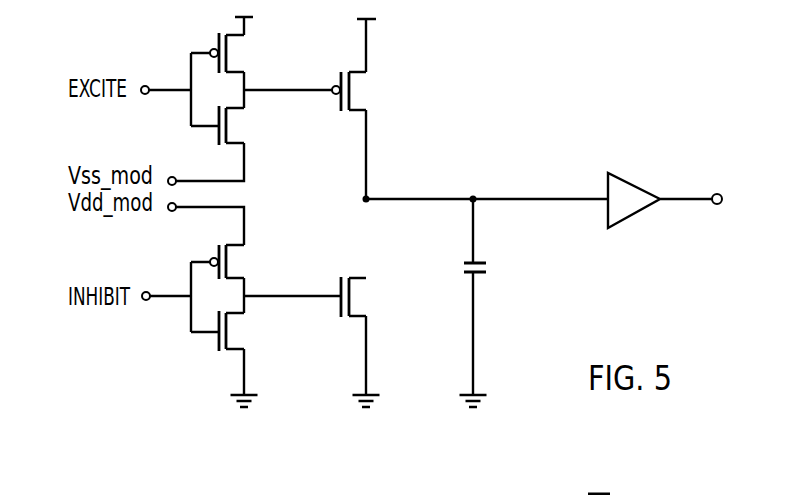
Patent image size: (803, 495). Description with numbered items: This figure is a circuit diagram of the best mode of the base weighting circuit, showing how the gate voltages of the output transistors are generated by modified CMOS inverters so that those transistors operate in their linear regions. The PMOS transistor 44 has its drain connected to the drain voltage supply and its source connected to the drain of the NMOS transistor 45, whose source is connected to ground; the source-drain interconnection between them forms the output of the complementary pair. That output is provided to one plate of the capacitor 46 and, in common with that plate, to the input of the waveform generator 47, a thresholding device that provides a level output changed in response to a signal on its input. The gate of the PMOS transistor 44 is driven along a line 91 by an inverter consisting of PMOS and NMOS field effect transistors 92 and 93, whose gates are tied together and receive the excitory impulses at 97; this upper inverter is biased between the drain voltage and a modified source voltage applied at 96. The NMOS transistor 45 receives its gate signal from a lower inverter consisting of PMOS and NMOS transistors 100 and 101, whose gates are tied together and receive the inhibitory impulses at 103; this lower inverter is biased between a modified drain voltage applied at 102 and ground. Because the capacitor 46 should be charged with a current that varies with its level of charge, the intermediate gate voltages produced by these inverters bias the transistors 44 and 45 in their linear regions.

The PMOS transistor 44 is at (362, 75).
The NMOS transistor 45 is at (360, 282).
The capacitor 46 is at (478, 262).
The waveform generator 47 is at (628, 182).
The excite inverter output line 91 is at (309, 96).
The PMOS field effect transistor 92 is at (242, 70).
The NMOS field effect transistor 93 is at (240, 143).
The Vss_mod input line 96 is at (207, 180).
The excitory impulse input 97 is at (175, 89).
The PMOS transistor 100 is at (240, 245).
The NMOS transistor 101 is at (238, 318).
The Vdd_mod input line 102 is at (215, 208).
The inhibitory impulse input 103 is at (175, 298).